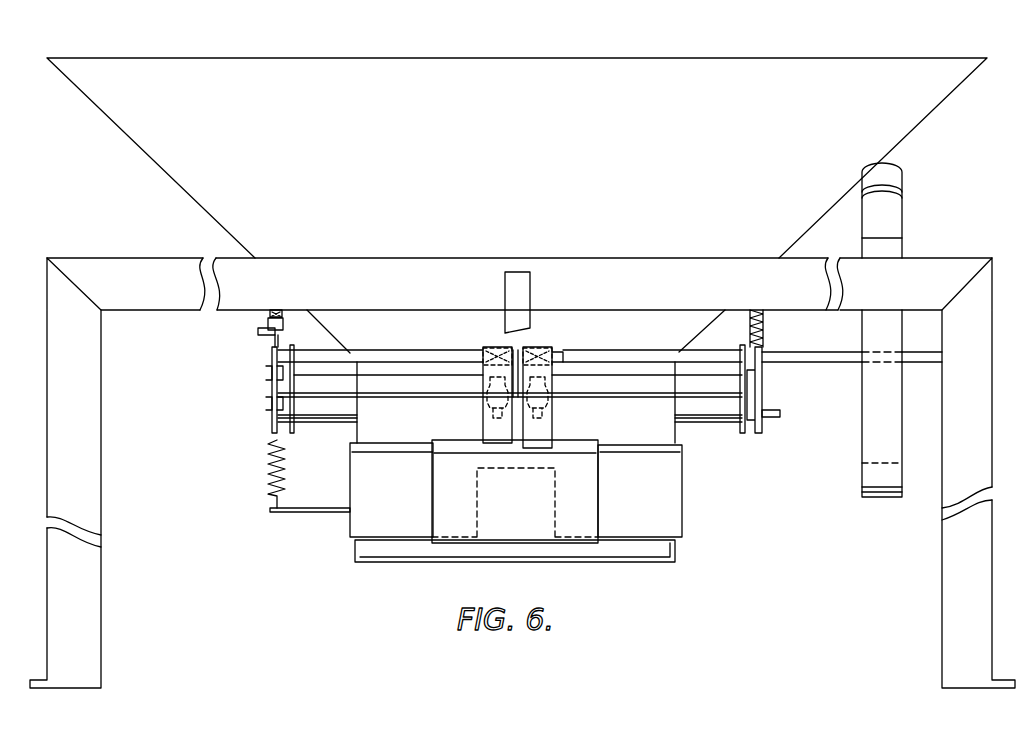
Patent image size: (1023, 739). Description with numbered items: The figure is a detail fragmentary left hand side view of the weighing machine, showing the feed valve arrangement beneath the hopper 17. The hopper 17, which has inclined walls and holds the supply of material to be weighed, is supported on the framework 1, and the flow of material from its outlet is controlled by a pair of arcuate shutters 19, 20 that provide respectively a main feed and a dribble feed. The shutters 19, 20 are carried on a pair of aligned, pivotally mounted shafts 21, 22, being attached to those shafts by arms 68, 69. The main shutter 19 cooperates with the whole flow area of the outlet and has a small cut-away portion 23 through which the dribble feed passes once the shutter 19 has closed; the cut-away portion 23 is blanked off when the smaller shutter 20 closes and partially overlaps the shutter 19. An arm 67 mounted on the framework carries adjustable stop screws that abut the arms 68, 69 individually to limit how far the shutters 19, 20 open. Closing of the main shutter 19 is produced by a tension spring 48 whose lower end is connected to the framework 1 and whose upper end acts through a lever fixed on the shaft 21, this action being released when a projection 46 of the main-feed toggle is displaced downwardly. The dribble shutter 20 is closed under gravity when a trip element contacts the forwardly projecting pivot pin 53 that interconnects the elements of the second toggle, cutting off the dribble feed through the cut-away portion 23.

The framework 1 is at (943, 268).
The hopper 17 is at (673, 137).
The arm 67 is at (524, 271).
The projection 46 is at (258, 332).
The shaft 21 is at (381, 351).
The shaft 22 is at (632, 351).
The arm 68 is at (488, 428).
The arm 69 is at (546, 431).
The pivot pin 53 is at (778, 411).
The tension spring 48 is at (262, 465).
The shutter 19 is at (362, 522).
The cut-away portion 23 is at (555, 520).
The shutter 20 is at (500, 535).